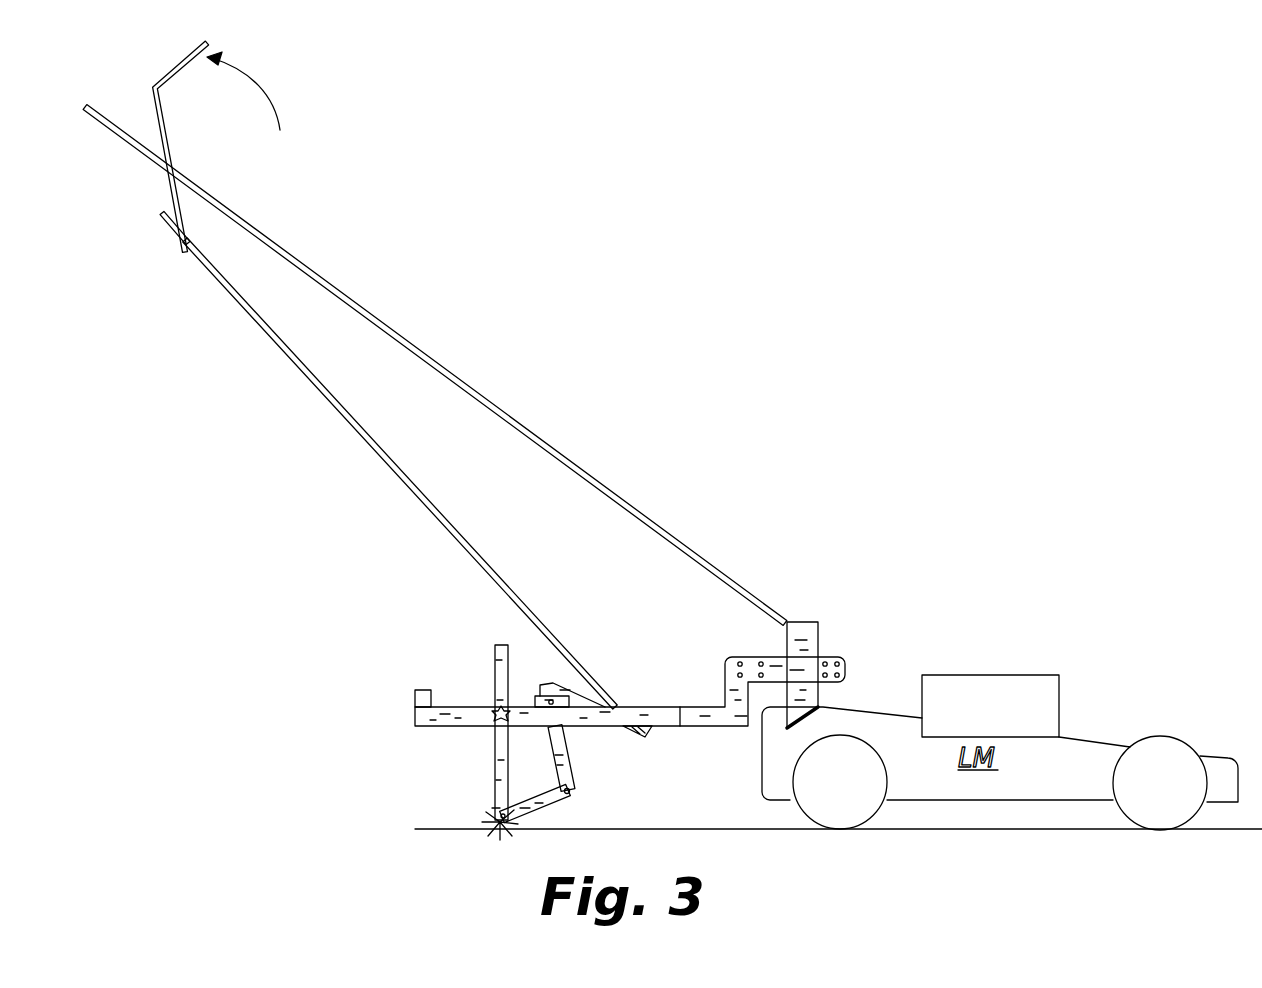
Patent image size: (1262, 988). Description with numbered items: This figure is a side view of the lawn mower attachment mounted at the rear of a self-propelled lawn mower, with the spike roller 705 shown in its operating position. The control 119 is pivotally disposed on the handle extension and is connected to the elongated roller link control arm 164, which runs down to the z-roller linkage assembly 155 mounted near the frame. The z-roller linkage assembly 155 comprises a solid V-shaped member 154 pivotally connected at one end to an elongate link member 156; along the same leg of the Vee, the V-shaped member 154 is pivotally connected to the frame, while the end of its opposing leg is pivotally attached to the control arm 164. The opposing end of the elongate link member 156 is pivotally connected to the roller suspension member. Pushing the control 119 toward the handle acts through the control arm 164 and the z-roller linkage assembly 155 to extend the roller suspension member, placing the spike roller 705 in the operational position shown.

The control 119 is at (166, 71).
The elongated roller link control arm 164 is at (363, 440).
The solid V-shaped member 154 is at (577, 695).
The z-roller linkage assembly 155 is at (616, 755).
The elongate link member 156 is at (574, 814).
The spike roller 705 is at (489, 807).